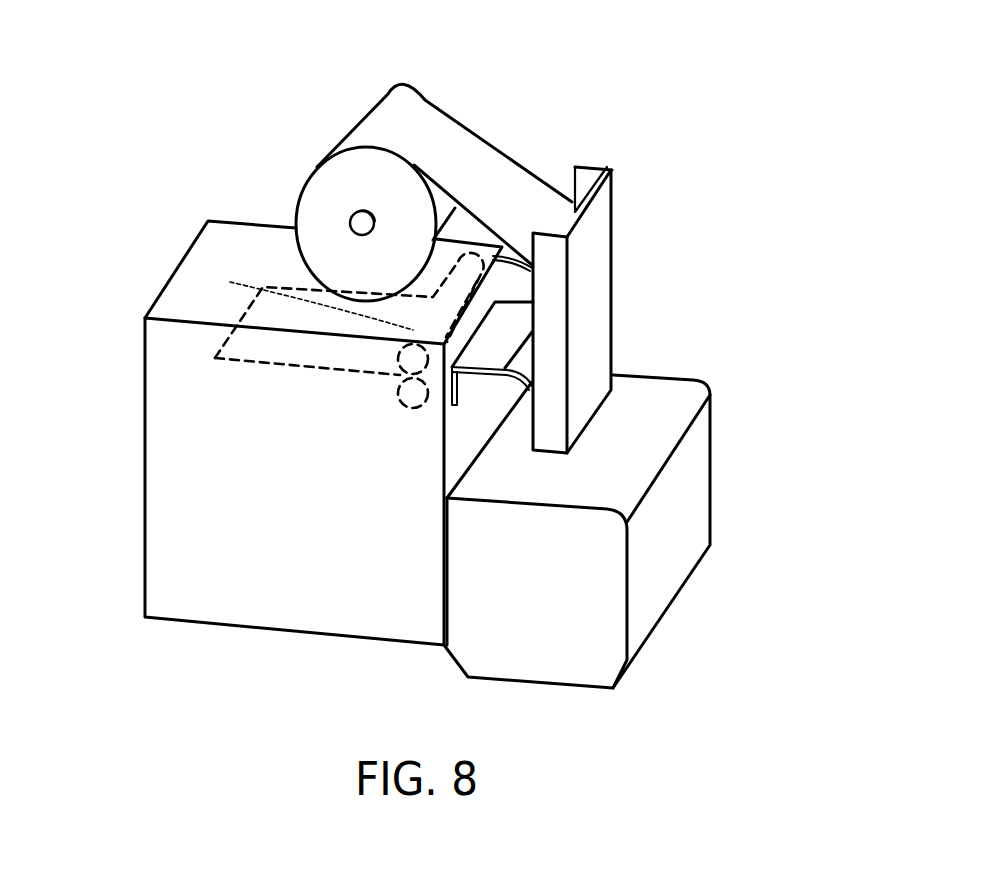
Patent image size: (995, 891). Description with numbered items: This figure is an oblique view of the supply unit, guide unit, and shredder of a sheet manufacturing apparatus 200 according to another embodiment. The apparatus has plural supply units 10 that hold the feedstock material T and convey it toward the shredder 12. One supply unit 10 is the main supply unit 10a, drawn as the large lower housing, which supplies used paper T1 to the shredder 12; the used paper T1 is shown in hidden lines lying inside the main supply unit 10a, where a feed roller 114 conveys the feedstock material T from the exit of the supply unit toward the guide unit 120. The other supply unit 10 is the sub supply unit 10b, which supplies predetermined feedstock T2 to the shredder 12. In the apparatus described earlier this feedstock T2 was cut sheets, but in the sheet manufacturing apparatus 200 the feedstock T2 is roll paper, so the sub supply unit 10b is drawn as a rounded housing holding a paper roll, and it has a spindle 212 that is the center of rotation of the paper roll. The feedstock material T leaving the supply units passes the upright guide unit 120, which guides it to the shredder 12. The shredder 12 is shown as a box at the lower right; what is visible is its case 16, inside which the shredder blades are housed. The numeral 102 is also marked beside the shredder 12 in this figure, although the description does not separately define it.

The sheet manufacturing apparatus 200 is at (422, 365).
The supply unit 10 is at (315, 361).
The main supply unit 10a is at (172, 486).
The sub supply unit 10b is at (301, 128).
The shredder 12 is at (624, 499).
The cutter unit 102 is at (611, 531).
The case 16 is at (682, 500).
The feed roller 114 is at (230, 282).
The guide unit 120 is at (640, 174).
The spindle 212 is at (362, 224).
The feedstock material T is at (286, 277).
The used paper T1 is at (262, 335).
The feedstock T2 is at (281, 224).